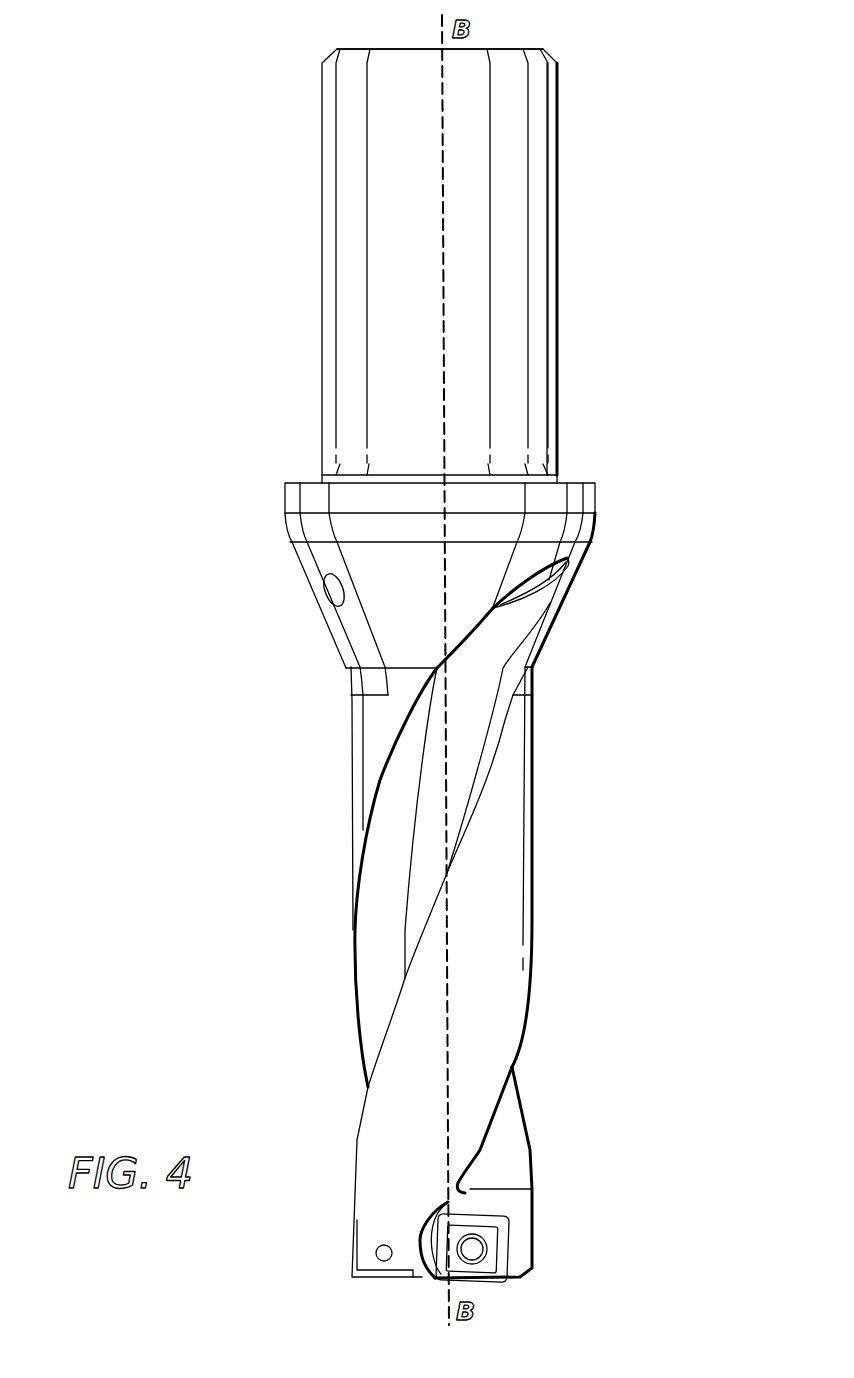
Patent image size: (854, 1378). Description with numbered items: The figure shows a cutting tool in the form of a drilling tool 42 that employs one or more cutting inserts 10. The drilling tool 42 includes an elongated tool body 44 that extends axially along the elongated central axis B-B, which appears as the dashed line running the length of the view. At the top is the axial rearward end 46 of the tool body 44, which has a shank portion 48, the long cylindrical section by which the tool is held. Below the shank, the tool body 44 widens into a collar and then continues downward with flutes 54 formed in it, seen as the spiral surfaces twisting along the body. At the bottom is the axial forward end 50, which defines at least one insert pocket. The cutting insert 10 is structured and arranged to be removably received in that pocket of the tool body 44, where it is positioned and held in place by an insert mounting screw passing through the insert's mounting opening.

The drilling tool 42 is at (626, 94).
The shank portion 48 is at (563, 276).
The axial rearward end 46 is at (372, 49).
The tool body 44 is at (276, 522).
The flutes 54 is at (380, 929).
The axial forward end 50 is at (363, 1277).
The cutting insert 10 is at (503, 1257).